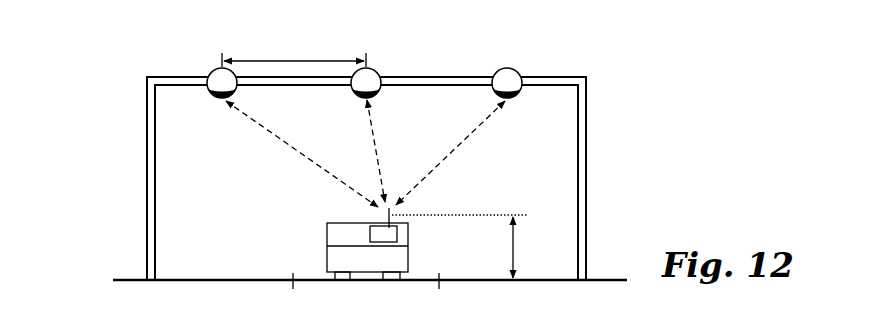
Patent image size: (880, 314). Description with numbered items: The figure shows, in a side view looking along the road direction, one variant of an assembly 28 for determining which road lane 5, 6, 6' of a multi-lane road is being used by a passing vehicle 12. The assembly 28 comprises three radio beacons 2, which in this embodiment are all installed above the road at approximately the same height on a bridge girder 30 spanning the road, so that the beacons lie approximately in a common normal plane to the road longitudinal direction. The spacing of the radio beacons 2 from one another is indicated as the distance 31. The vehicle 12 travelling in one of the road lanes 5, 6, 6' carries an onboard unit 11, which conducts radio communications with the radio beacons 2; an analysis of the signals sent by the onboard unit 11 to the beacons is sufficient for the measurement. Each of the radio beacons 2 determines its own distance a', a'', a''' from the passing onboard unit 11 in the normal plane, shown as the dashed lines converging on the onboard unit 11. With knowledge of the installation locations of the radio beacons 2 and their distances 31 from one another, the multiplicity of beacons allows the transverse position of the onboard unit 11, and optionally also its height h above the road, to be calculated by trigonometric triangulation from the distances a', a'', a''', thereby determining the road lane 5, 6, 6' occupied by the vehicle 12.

The assembly 28 is at (112, 59).
The radio beacon 2 is at (213, 72).
The distance 31 is at (294, 52).
The bridge girder 30 is at (586, 133).
The vehicle 12 is at (327, 235).
The onboard unit 11 is at (393, 236).
The road lane 5 is at (237, 282).
The road lane 6 is at (371, 298).
The road lane 6' is at (517, 298).
The height h is at (464, 246).
The distance a' is at (388, 151).
The distance a'' is at (302, 154).
The distance a''' is at (450, 153).